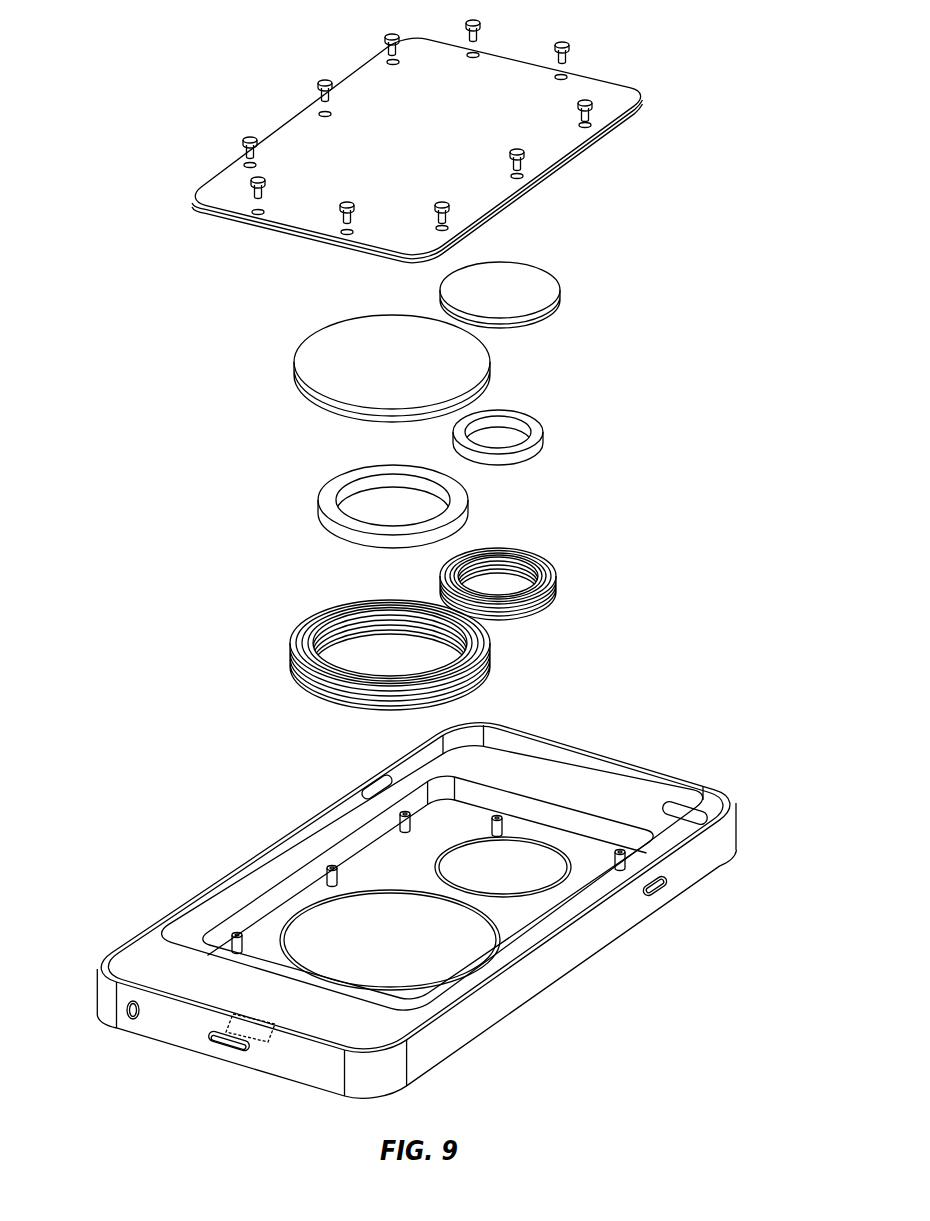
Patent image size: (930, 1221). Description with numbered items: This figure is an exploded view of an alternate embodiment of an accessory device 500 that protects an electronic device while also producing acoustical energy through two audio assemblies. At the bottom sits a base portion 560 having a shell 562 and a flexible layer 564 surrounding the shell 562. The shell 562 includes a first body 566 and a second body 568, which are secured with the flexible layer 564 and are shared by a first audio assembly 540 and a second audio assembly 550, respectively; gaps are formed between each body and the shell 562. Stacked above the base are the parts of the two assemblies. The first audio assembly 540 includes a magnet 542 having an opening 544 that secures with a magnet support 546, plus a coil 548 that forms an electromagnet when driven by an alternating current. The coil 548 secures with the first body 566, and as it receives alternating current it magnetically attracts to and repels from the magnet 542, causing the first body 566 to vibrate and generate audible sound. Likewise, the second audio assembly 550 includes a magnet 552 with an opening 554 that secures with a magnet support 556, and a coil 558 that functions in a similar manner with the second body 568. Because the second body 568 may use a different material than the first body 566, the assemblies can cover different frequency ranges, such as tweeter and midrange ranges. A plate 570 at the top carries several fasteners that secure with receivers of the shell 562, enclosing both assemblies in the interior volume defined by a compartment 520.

The accessory device 500 is at (762, 94).
The plate 570 is at (434, 151).
The first audio assembly 540 is at (636, 342).
The magnet support 546 is at (519, 299).
The opening 544 is at (505, 392).
The magnet 542 is at (531, 421).
The coil 548 is at (548, 560).
The second audio assembly 550 is at (174, 436).
The magnet support 556 is at (418, 373).
The opening 554 is at (342, 458).
The magnet 552 is at (323, 492).
The coil 558 is at (310, 626).
The base portion 560 is at (111, 843).
The shell 562 is at (703, 748).
The flexible layer 564 is at (128, 963).
The compartment 520 is at (538, 782).
The first body 566 is at (521, 878).
The second body 568 is at (411, 949).